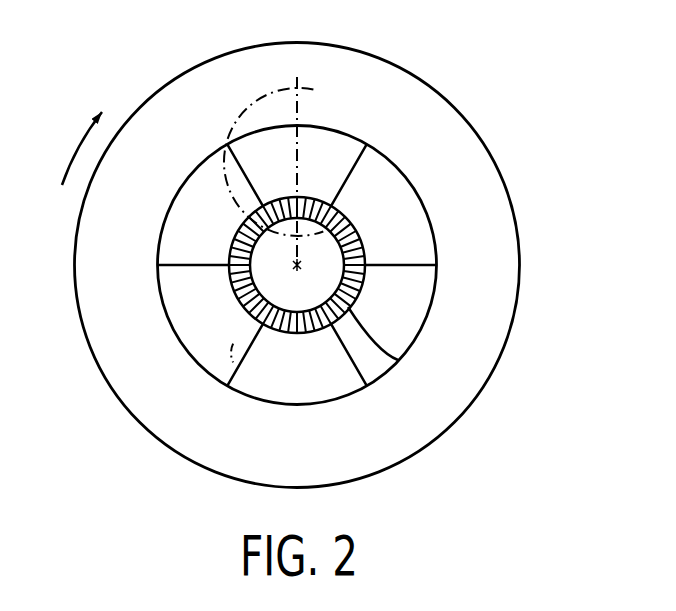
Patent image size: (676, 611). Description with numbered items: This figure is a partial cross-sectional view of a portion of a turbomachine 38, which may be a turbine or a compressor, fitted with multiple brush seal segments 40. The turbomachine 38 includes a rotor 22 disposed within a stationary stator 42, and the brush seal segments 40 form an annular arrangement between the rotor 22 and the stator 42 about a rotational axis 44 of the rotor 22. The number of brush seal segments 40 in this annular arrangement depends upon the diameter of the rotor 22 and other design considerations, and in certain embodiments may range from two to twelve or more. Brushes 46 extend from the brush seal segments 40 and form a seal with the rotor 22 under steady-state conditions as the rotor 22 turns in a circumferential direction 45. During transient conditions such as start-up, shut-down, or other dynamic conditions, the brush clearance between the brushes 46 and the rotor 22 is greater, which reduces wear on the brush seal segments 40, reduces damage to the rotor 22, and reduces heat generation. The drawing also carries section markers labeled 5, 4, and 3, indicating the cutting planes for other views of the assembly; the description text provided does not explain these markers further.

The turbomachine 38 is at (418, 56).
The stator 42 is at (506, 190).
The brush seal segments 40 is at (390, 301).
The brushes 46 is at (398, 360).
The rotor 22 is at (265, 283).
The rotational axis 44 is at (295, 264).
The circumferential direction 45 is at (73, 150).
The section line 5- 5 is at (297, 77).
The section line 4- 4 is at (323, 92).
The section line 3- 3 is at (237, 337).